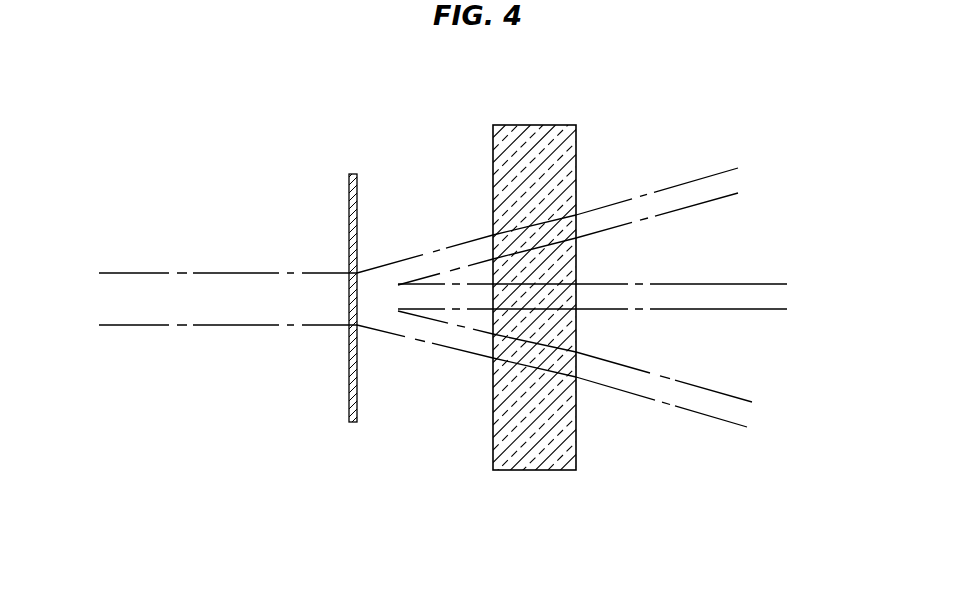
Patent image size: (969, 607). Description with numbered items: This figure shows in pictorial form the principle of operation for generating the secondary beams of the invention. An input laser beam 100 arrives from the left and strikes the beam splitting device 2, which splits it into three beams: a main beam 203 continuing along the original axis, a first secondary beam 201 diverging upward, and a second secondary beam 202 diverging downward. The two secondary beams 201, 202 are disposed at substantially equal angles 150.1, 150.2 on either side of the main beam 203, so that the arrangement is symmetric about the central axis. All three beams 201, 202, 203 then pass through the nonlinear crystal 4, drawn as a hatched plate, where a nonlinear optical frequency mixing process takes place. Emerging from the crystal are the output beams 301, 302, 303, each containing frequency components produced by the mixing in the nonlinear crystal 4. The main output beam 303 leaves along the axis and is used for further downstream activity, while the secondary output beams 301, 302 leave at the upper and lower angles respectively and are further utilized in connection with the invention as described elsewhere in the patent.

The input laser beam 100 is at (212, 292).
The beam splitting device 2 is at (349, 188).
The nonlinear crystal 4 is at (493, 136).
The first secondary beam 201 is at (402, 264).
The second secondary beam 202 is at (403, 327).
The main beam 203 is at (420, 293).
The angle 150.1 is at (477, 285).
The angle 150.2 is at (477, 312).
The secondary output beam 301 is at (693, 193).
The secondary output beam 302 is at (693, 405).
The main output beam 303 is at (753, 300).